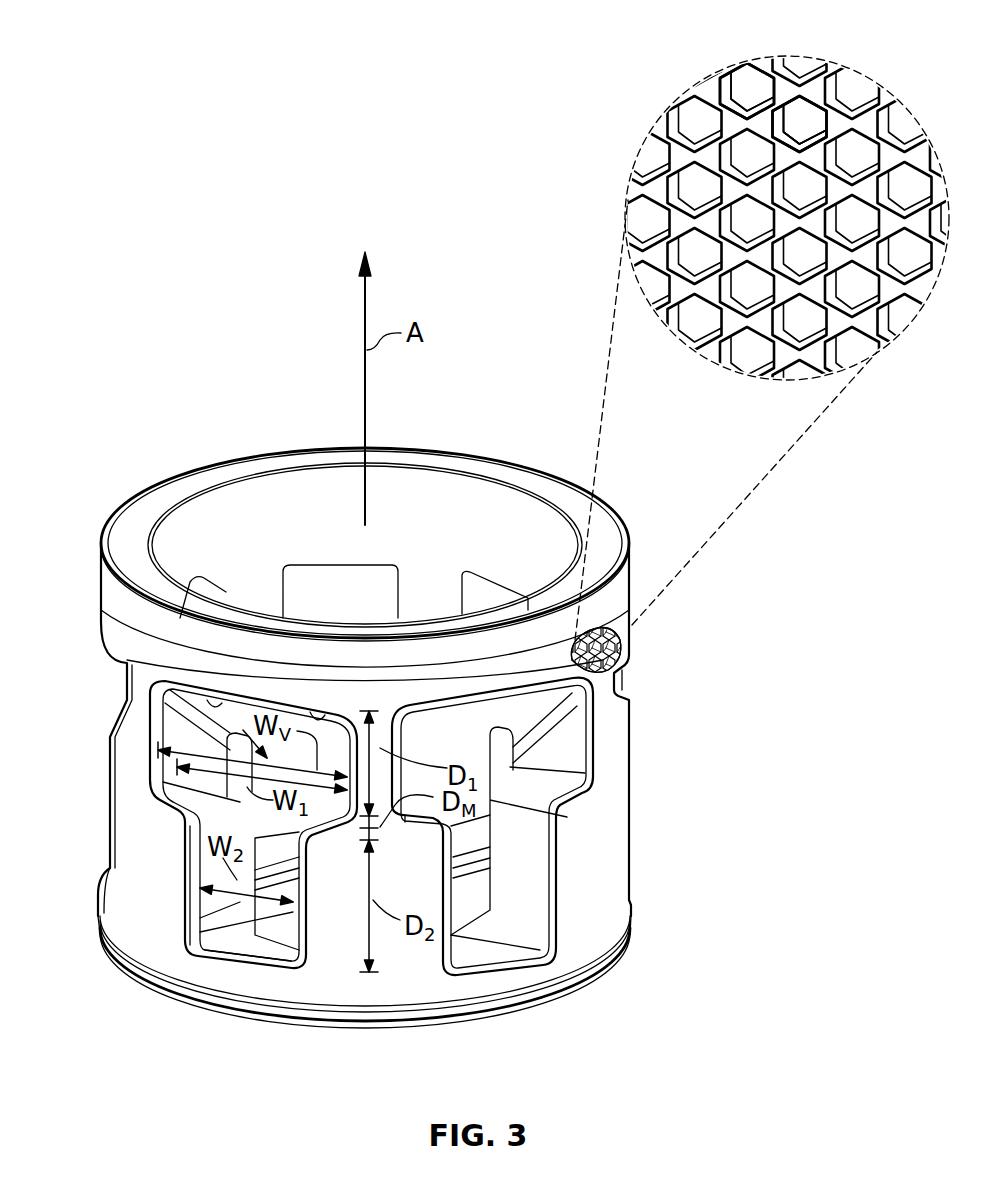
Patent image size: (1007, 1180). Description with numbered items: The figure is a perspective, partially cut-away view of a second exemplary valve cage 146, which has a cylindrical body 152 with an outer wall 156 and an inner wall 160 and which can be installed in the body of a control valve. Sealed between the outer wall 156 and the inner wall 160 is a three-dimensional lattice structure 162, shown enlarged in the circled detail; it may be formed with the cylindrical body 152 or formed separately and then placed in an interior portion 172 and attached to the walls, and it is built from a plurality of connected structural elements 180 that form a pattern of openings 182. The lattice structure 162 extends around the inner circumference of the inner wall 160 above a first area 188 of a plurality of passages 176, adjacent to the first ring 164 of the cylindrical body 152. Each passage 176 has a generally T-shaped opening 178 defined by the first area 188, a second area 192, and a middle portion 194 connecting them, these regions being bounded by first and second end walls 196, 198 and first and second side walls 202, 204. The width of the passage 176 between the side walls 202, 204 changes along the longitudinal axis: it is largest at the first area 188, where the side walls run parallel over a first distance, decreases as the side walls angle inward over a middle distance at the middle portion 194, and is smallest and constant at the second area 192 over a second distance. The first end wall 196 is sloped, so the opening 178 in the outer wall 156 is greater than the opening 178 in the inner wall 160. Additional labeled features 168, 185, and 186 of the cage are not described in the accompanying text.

The valve cage 146 is at (88, 400).
The cylindrical body 152 is at (613, 817).
The outer wall 156 is at (106, 613).
The inner wall 160 is at (213, 517).
The three-dimensional lattice structure 162 is at (873, 95).
The first ring 164 is at (587, 497).
The bottom rim 168 is at (518, 1010).
The interior portion 172 is at (607, 660).
The passages 176 is at (277, 890).
The T-shaped opening 178 is at (213, 700).
The connected structural elements 180 is at (775, 95).
The openings 182 is at (803, 108).
The top ring 185 is at (167, 495).
The bottom ring 186 is at (108, 945).
The first area 188 is at (247, 723).
The second area 192 is at (275, 912).
The middle portion 194 is at (200, 797).
The first end wall 196 is at (328, 710).
The second end wall 198 is at (257, 943).
The first side wall 202 is at (197, 840).
The second side wall 204 is at (300, 897).